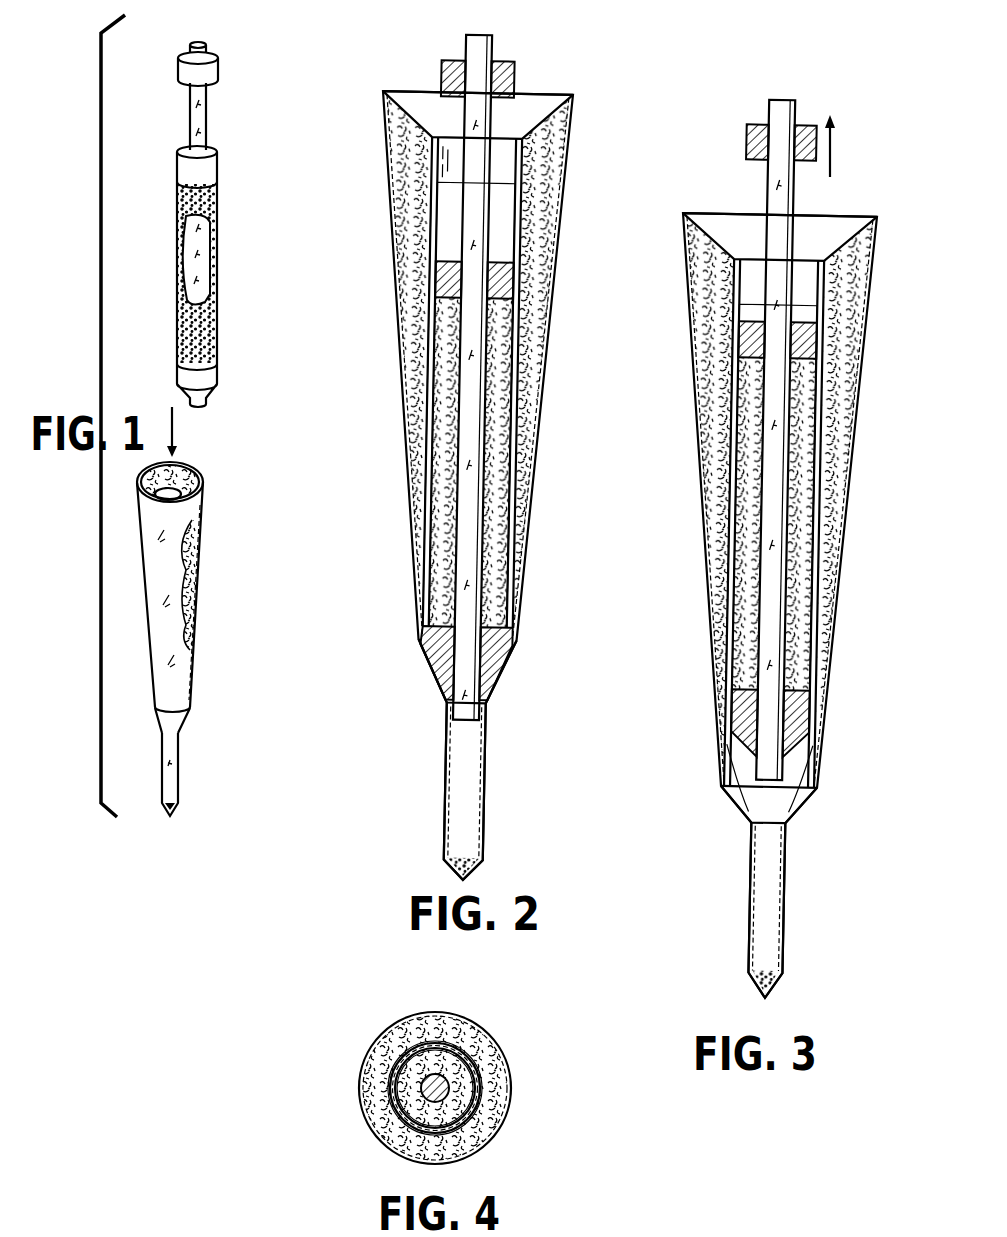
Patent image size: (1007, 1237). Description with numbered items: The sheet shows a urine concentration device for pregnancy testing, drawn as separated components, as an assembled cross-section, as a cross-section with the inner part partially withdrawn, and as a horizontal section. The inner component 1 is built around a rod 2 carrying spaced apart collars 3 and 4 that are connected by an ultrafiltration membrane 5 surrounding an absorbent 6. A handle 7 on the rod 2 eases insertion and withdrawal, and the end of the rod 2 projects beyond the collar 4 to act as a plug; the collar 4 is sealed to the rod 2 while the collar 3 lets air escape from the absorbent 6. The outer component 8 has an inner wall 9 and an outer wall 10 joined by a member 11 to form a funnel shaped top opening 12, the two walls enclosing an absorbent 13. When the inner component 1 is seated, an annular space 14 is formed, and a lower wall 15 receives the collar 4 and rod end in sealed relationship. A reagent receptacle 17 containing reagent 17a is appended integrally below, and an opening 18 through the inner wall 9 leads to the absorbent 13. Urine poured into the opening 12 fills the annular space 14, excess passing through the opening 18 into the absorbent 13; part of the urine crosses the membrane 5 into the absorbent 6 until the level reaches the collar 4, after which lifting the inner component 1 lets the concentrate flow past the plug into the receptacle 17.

In FIG. 1, the inner component 1 is at (211, 222).
In FIG. 2, the inner component 1 is at (455, 362).
In FIG. 3, the inner component 1 is at (750, 422).
In FIG. 1, the rod 2 is at (207, 114).
In FIG. 2, the rod 2 is at (492, 33).
In FIG. 3, the rod 2 is at (793, 100).
In FIG. 4, the rod 2 is at (449, 1097).
In FIG. 1, the collar 3 is at (217, 169).
In FIG. 2, the collar 3 is at (447, 262).
In FIG. 3, the collar 3 is at (761, 321).
In FIG. 1, the collar 4 is at (179, 380).
In FIG. 2, the collar 4 is at (430, 655).
In FIG. 3, the collar 4 is at (735, 711).
In FIG. 1, the ultrafiltration membrane 5 is at (178, 277).
In FIG. 2, the ultrafiltration membrane 5 is at (440, 335).
In FIG. 3, the ultrafiltration membrane 5 is at (737, 441).
In FIG. 4, the ultrafiltration membrane 5 is at (407, 1065).
In FIG. 1, the absorbent 6 is at (200, 215).
In FIG. 2, the absorbent 6 is at (450, 400).
In FIG. 3, the absorbent 6 is at (740, 478).
In FIG. 4, the absorbent 6 is at (444, 1108).
In FIG. 1, the handle 7 is at (215, 74).
In FIG. 2, the handle 7 is at (513, 76).
In FIG. 3, the handle 7 is at (744, 140).
In FIG. 1, the outer component 8 is at (177, 619).
In FIG. 2, the outer component 8 is at (466, 468).
In FIG. 3, the outer component 8 is at (767, 586).
In FIG. 1, the inner wall 9 is at (179, 490).
In FIG. 2, the inner wall 9 is at (428, 436).
In FIG. 3, the inner wall 9 is at (728, 513).
In FIG. 4, the inner wall 9 is at (395, 1118).
In FIG. 1, the outer wall 10 is at (144, 594).
In FIG. 2, the outer wall 10 is at (542, 487).
In FIG. 3, the outer wall 10 is at (842, 578).
In FIG. 4, the outer wall 10 is at (514, 1081).
In FIG. 1, the member 11 is at (164, 471).
In FIG. 2, the member 11 is at (412, 103).
In FIG. 3, the member 11 is at (708, 212).
In FIG. 1, the funnel shaped top opening 12 is at (174, 477).
In FIG. 2, the funnel shaped top opening 12 is at (527, 114).
In FIG. 3, the funnel shaped top opening 12 is at (810, 247).
In FIG. 1, the absorbent 13 is at (195, 546).
In FIG. 2, the absorbent 13 is at (405, 176).
In FIG. 3, the absorbent 13 is at (703, 307).
In FIG. 4, the absorbent 13 is at (462, 1025).
In FIG. 2, the annular space 14 is at (510, 394).
In FIG. 3, the annular space 14 is at (813, 431).
In FIG. 4, the annular space 14 is at (473, 1057).
In FIG. 1, the wall 15 is at (157, 719).
In FIG. 2, the wall 15 is at (443, 686).
In FIG. 3, the wall 15 is at (737, 806).
In FIG. 1, the reagent receptacle 17 is at (149, 774).
In FIG. 2, the reagent receptacle 17 is at (486, 781).
In FIG. 3, the reagent receptacle 17 is at (745, 903).
In FIG. 2, the reagent 17a is at (481, 856).
In FIG. 3, the reagent 17a is at (748, 973).
In FIG. 2, the opening 18 is at (437, 288).
In FIG. 3, the opening 18 is at (725, 401).
In FIG. 4, the opening 18 is at (387, 1089).